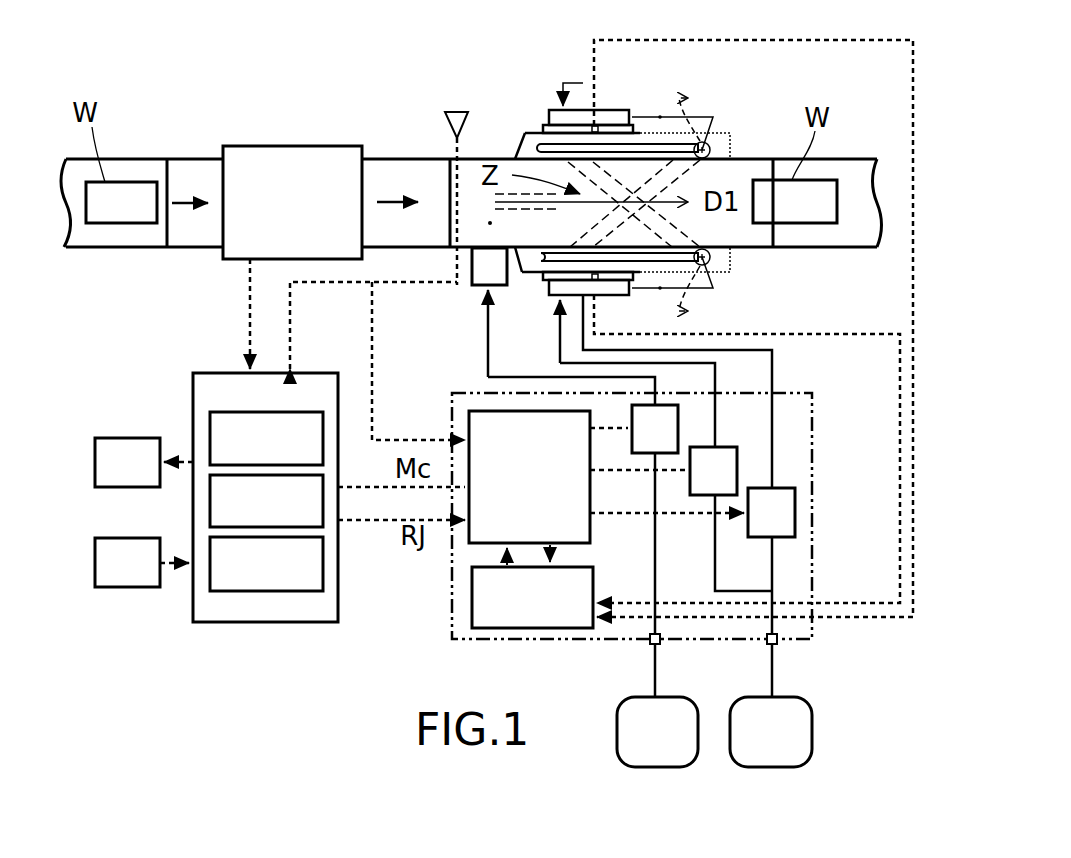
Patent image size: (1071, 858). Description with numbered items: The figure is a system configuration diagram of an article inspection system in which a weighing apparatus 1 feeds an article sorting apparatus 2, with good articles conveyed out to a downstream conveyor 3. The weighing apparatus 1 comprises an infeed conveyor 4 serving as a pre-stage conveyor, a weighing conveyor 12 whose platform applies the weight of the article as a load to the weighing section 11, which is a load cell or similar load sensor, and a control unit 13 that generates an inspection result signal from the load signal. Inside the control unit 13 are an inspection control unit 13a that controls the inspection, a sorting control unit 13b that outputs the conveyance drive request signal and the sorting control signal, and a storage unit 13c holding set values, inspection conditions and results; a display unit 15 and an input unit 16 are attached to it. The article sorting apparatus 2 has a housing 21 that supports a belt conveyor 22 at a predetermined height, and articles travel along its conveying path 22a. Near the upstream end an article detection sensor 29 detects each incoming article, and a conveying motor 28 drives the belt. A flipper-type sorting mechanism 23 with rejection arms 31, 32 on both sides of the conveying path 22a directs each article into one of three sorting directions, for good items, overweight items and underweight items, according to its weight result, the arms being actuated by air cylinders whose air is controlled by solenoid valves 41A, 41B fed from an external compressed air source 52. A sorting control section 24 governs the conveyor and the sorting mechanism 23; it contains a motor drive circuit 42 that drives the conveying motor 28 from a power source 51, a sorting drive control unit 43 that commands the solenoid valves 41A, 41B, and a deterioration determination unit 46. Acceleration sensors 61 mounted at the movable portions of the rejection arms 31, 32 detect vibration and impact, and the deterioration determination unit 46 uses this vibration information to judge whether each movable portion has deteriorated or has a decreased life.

The weighing apparatus 1 is at (384, 150).
The article sorting apparatus 2 is at (754, 154).
The conveyor 3 is at (842, 155).
The infeed conveyor 4 is at (118, 158).
The weighing section 11 is at (275, 146).
The weighing conveyor 12 is at (177, 158).
The control unit 13 is at (229, 490).
The inspection control unit 13a is at (247, 453).
The sorting control unit 13b is at (247, 515).
The storage unit 13c is at (247, 578).
The display unit 15 is at (113, 477).
The input unit 16 is at (113, 577).
The housing 21 is at (658, 289).
The belt conveyor 22 is at (472, 158).
The conveying path 22a is at (490, 223).
The sorting mechanism 23 is at (642, 109).
The sorting control section 24 is at (666, 496).
The conveying motor 28 is at (478, 288).
The article detection sensor 29 is at (456, 110).
The rejection arm 31 is at (563, 143).
The rejection arm 32 is at (565, 263).
The solenoid valve 41A is at (737, 470).
The solenoid valve 41B is at (795, 512).
The motor drive circuit 42 is at (678, 430).
The sorting drive control unit 43 is at (515, 448).
The deterioration determination unit 46 is at (517, 607).
The power source 51 is at (643, 747).
The external compressed air source 52 is at (757, 747).
The acceleration sensor 61 is at (597, 127).